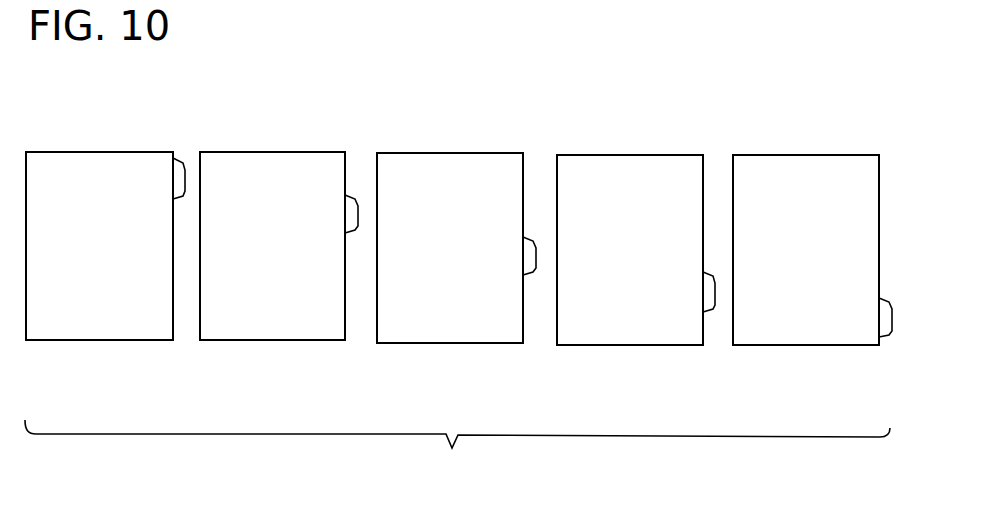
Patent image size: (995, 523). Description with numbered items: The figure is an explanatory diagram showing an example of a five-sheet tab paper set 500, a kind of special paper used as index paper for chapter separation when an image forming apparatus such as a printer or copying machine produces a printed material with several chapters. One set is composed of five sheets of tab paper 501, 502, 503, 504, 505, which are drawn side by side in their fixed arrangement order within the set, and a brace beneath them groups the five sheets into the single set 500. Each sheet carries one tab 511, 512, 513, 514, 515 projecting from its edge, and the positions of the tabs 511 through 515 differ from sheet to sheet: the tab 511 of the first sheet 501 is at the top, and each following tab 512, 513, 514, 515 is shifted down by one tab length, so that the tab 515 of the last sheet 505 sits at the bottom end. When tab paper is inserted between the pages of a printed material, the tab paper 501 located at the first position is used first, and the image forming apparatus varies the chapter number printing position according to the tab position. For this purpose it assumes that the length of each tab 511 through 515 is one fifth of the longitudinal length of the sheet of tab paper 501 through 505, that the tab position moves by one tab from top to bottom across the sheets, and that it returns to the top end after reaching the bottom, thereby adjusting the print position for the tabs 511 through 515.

The five-sheet tab paper set 500 is at (457, 450).
The tab paper 501 is at (98, 152).
The tab paper 502 is at (273, 152).
The tab paper 503 is at (449, 153).
The tab paper 504 is at (630, 155).
The tab paper 505 is at (807, 155).
The tab 511 is at (176, 157).
The tab 512 is at (350, 195).
The tab 513 is at (529, 237).
The tab 514 is at (708, 312).
The tab 515 is at (886, 340).